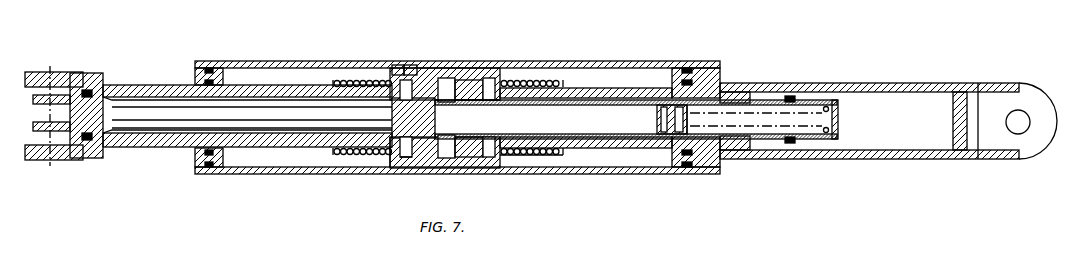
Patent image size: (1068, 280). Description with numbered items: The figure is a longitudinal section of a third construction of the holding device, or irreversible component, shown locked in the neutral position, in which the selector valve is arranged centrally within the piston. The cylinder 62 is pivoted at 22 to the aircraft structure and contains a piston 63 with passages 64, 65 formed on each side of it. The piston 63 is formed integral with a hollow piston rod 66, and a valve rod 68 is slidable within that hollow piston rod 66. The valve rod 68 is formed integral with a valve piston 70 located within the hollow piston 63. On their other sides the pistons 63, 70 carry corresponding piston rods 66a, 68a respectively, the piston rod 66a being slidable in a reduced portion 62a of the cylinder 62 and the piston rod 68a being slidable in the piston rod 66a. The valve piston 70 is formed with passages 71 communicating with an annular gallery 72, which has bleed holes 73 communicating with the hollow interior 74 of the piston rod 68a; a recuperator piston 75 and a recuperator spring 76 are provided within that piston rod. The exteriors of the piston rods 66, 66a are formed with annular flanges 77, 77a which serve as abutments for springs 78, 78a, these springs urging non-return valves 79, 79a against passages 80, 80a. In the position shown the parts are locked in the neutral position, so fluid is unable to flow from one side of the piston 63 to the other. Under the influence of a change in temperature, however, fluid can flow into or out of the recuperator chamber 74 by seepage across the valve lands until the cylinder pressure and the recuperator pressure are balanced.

The pivot 22 is at (1012, 113).
The cylinder 62 is at (652, 64).
The reduced portion of the cylinder 62a is at (882, 83).
The piston 63 is at (447, 79).
The passage 64 is at (415, 79).
The passage 65 is at (488, 78).
The hollow piston rod 66 is at (262, 90).
The piston rod 66a is at (798, 97).
The valve rod 68 is at (147, 103).
The piston rod 68a is at (748, 100).
The valve piston 70 is at (392, 158).
The passage 71 is at (424, 86).
The annular gallery 72 is at (458, 82).
The bleed hole 73 is at (436, 104).
The hollow interior 74 is at (603, 113).
The recuperator piston 75 is at (655, 122).
The recuperator spring 76 is at (690, 108).
The annular flange 77 is at (333, 84).
The annular flange 77a is at (563, 83).
The spring 78 is at (343, 81).
The spring 78a is at (557, 170).
The non-return valve 79 is at (392, 72).
The non-return valve 79a is at (508, 82).
The passage 80 is at (408, 68).
The passage 80a is at (505, 103).